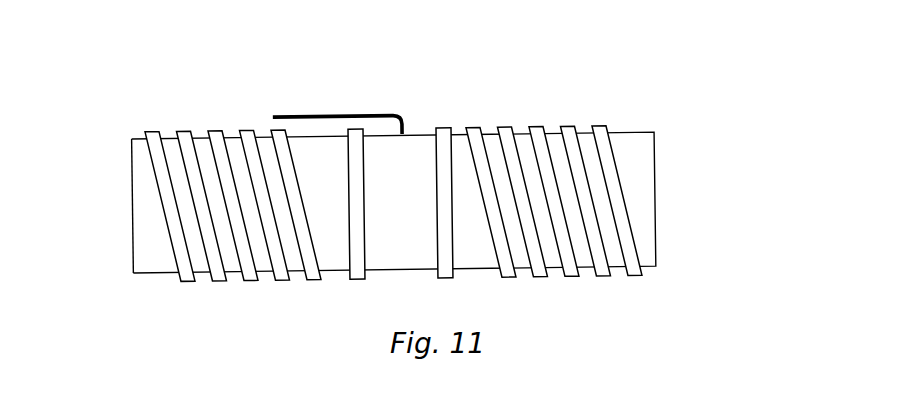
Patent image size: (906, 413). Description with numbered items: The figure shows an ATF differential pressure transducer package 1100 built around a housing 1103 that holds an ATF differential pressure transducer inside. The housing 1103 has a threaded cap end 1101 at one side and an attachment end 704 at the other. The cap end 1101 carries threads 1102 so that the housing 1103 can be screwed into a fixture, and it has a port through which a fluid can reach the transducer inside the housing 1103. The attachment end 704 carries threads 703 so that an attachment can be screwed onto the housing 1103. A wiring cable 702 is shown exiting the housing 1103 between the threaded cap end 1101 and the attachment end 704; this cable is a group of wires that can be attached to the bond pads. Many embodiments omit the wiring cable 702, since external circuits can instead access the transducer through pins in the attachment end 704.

The ATF differential pressure transducer package 1100 is at (672, 94).
The threaded cap end 1101 is at (163, 255).
The threads 1102 is at (211, 133).
The housing 1103 is at (395, 162).
The wiring cable 702 is at (323, 113).
The threads 703 is at (480, 130).
The attachment end 704 is at (643, 142).